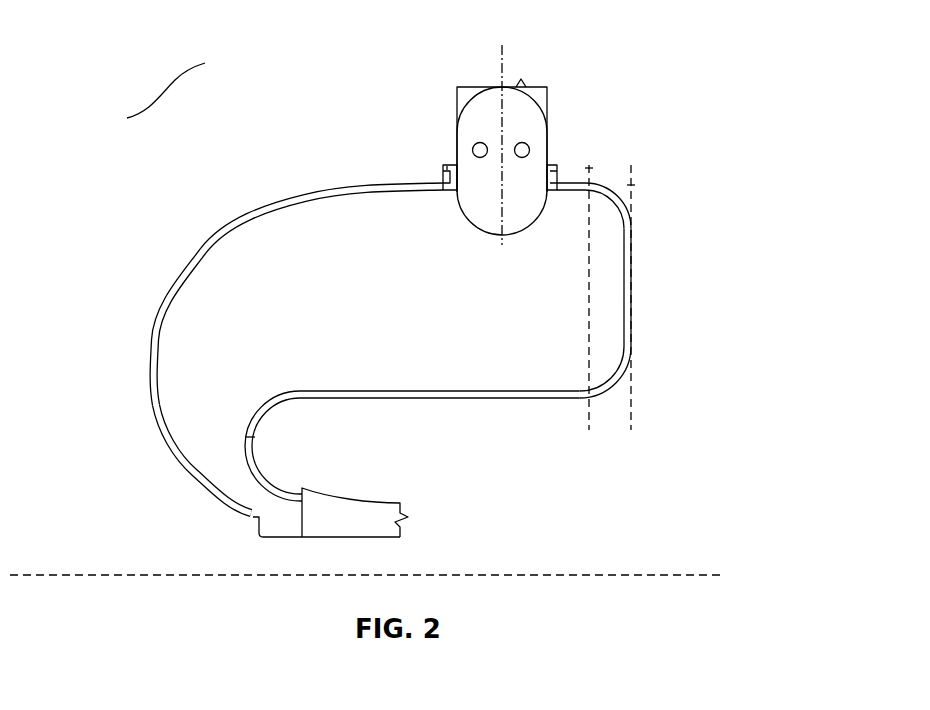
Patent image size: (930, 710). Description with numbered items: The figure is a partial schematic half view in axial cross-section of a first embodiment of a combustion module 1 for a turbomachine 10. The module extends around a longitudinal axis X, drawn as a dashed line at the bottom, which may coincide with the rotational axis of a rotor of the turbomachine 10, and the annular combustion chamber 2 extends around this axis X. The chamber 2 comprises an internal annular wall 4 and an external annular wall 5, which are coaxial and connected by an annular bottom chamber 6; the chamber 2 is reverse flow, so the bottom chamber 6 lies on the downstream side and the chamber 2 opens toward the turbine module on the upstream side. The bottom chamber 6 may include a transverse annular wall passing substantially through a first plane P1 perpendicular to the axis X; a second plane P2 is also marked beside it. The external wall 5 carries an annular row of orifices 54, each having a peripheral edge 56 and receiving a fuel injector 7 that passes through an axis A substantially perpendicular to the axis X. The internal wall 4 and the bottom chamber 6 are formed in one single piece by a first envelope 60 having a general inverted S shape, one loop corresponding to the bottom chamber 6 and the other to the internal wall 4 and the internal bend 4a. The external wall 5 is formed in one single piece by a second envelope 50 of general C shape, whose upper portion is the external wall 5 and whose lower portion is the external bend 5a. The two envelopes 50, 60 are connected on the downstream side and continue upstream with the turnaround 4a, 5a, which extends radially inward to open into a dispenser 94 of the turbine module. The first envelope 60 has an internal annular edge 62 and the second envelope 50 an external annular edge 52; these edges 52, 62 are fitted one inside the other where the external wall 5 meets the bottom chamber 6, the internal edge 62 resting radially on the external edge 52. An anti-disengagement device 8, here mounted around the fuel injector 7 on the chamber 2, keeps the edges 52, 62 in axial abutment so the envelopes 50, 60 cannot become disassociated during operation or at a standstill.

The turbomachine 10 is at (160, 51).
The combustion module 1 is at (246, 136).
The annular combustion chamber 2 is at (410, 284).
The internal annular wall 4 is at (544, 396).
The internal bend 4a is at (245, 437).
The external annular wall 5 is at (204, 250).
The external bend 5a is at (150, 362).
The bottom chamber 6 is at (633, 241).
The fuel injector 7 is at (519, 113).
The anti-disengagement device 8 is at (437, 165).
The second envelope 50 is at (305, 192).
The external annular edge 52 is at (558, 172).
The orifice 54 is at (450, 165).
The peripheral edge 56 is at (440, 186).
The first envelope 60 is at (620, 362).
The internal annular edge 62 is at (567, 179).
The dispenser 94 is at (347, 513).
The injector axis A is at (503, 63).
The first plane P1 is at (634, 185).
The plane P2 is at (592, 168).
The longitudinal axis X is at (677, 575).